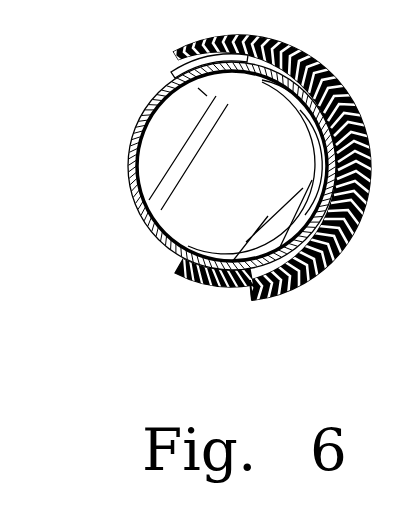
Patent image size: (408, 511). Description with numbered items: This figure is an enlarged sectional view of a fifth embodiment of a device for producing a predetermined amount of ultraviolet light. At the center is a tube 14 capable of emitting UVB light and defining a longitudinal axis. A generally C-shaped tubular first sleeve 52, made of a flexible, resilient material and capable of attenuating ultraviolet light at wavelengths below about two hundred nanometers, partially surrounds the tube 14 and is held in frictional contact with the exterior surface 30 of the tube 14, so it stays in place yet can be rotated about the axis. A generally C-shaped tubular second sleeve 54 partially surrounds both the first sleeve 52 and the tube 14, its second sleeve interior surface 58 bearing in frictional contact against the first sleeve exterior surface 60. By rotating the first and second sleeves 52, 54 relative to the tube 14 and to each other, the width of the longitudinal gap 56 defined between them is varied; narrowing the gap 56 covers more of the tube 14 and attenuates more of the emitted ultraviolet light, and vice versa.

The tube 14 is at (283, 84).
The exterior surface 30 is at (140, 212).
The first sleeve 52 is at (229, 293).
The second sleeve 54 is at (302, 293).
The longitudinal gap 56 is at (201, 183).
The second sleeve interior surface 58 is at (198, 57).
The first sleeve exterior surface 60 is at (203, 286).